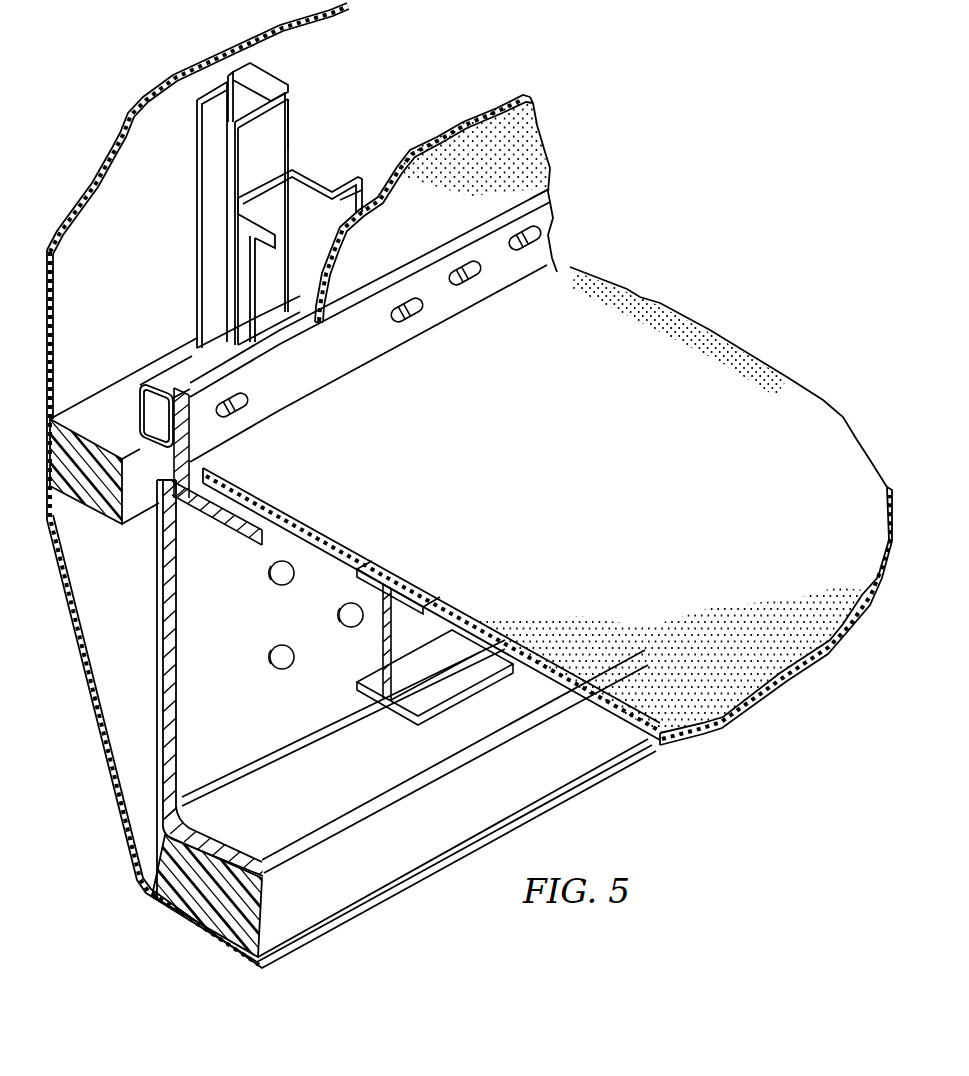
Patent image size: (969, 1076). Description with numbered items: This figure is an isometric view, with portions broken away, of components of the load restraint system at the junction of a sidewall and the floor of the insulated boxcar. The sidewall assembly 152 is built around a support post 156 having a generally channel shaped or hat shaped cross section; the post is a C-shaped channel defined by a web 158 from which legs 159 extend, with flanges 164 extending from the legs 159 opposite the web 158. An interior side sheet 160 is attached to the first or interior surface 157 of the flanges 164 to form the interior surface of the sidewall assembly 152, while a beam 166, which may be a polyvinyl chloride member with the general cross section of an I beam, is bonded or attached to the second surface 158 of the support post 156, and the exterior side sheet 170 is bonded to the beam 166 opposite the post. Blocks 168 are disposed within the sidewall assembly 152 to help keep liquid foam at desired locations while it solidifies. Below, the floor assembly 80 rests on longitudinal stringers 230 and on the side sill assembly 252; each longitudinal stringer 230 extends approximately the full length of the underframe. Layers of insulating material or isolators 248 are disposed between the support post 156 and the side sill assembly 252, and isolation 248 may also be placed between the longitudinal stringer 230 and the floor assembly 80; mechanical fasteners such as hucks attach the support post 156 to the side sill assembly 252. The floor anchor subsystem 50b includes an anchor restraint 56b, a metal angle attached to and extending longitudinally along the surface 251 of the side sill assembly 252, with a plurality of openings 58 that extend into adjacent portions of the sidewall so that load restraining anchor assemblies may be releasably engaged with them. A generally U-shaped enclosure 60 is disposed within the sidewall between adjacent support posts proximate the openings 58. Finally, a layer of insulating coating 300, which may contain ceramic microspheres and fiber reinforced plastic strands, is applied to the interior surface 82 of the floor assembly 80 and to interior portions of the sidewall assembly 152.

The floor anchor subsystem 50b is at (573, 200).
The anchor restraint 56b is at (373, 338).
The openings 58 is at (548, 234).
The U-shaped enclosure 60 is at (163, 383).
The floor assembly 80 is at (786, 375).
The interior surface 82 is at (625, 705).
The sidewall assembly 152 is at (114, 127).
The support post 156 is at (304, 157).
The first surface 157 is at (360, 210).
The web 158 is at (258, 182).
The legs 159 is at (248, 222).
The interior side sheet 160 is at (522, 100).
The flanges 164 is at (248, 264).
The beam 166 is at (252, 85).
The blocks 168 is at (110, 408).
The exterior side sheet 170 is at (158, 82).
The longitudinal stringer 230 is at (383, 649).
The isolators 248 is at (353, 577).
The surface 251 is at (270, 474).
The side sill assembly 252 is at (207, 727).
The insulating coating 300 is at (520, 140).